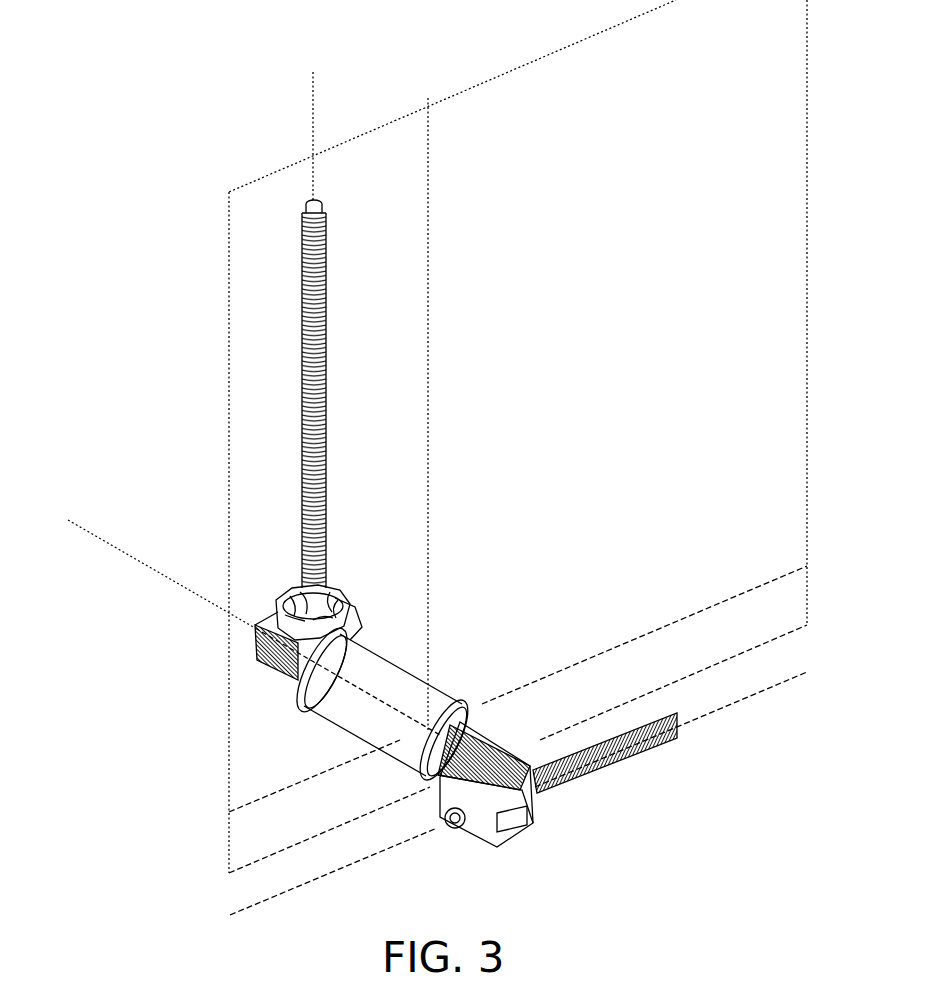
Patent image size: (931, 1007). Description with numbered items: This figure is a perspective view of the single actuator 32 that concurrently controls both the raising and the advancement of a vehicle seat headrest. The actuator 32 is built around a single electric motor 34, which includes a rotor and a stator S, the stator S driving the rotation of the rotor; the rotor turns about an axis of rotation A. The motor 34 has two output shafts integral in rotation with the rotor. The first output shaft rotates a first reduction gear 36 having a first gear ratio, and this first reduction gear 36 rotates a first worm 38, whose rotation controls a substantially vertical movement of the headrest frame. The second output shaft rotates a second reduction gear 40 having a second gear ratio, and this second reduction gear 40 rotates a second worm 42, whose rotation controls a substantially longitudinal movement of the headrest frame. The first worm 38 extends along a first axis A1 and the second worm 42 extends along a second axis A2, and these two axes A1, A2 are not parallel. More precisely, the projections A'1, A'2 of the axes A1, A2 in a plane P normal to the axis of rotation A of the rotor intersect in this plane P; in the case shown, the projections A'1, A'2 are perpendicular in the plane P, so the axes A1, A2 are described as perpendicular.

The actuator 32 is at (178, 529).
The electric motor 34 is at (375, 672).
The first reduction gear 36 is at (262, 656).
The first worm 38 is at (302, 443).
The second reduction gear 40 is at (515, 826).
The second worm 42 is at (655, 745).
The plane P is at (229, 234).
The axis of rotation A is at (251, 627).
The first axis A1 is at (313, 110).
The projection of the first axis A'1 is at (464, 414).
The second axis A2 is at (262, 904).
The projection of the second axis A'2 is at (478, 689).
The stator S is at (455, 778).